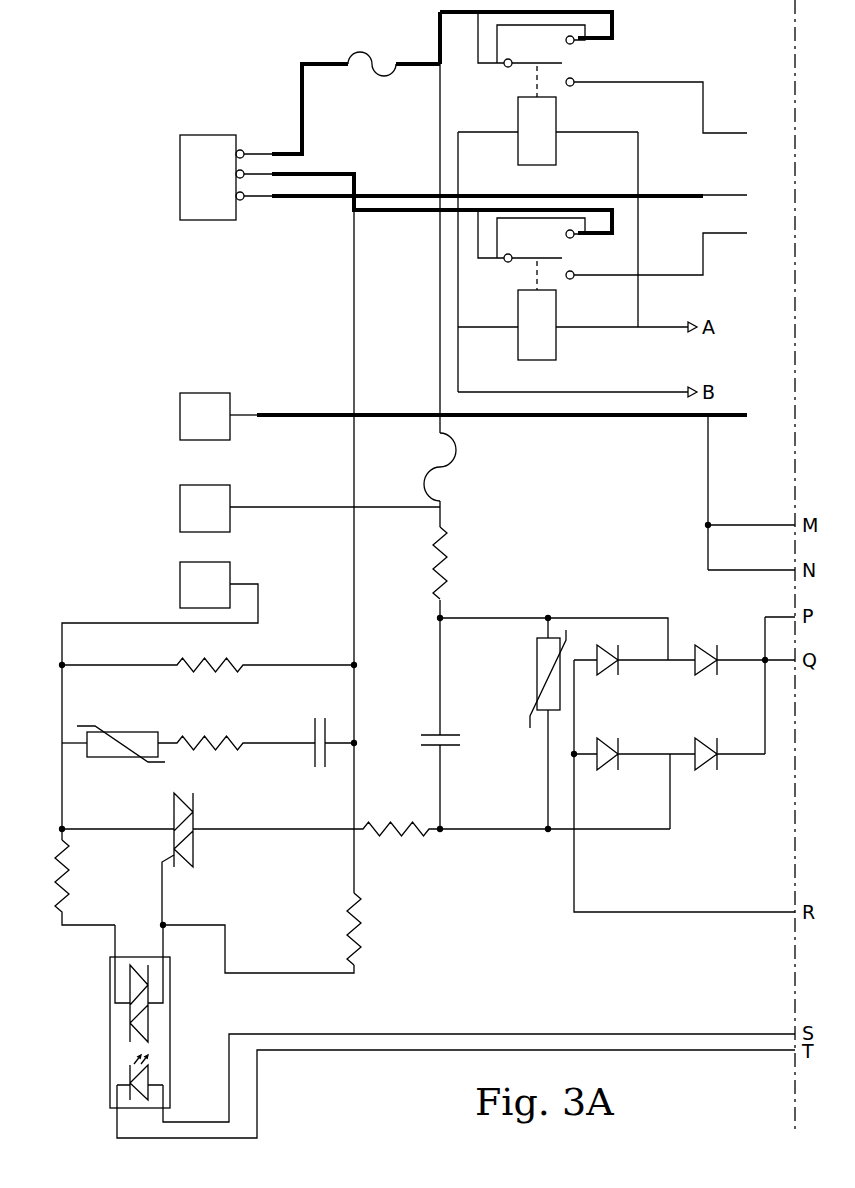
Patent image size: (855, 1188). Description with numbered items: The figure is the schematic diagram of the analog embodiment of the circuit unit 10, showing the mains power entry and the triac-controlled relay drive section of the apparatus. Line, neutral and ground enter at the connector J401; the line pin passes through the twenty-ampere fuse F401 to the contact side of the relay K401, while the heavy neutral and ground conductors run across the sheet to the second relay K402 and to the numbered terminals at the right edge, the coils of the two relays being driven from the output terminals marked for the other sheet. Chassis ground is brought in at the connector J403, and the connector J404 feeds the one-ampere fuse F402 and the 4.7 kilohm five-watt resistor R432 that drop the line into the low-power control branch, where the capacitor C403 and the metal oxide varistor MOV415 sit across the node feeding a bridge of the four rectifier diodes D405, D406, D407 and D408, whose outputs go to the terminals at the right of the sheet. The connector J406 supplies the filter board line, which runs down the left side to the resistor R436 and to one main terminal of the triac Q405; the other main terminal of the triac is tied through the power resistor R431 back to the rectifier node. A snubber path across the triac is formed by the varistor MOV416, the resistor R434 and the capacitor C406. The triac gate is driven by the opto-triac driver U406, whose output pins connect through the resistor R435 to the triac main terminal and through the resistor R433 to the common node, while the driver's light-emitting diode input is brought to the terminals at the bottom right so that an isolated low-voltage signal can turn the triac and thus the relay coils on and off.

The connector J401 is at (152, 165).
The fuse F401 is at (370, 53).
The relay K401 is at (593, 121).
The relay K402 is at (550, 285).
The connector J403 is at (159, 407).
The connector J404 is at (310, 496).
The connector J406 is at (154, 689).
The fuse F402 is at (468, 467).
The resistor R432 is at (468, 563).
The power control circuit 10 is at (645, 532).
The resistor R436 is at (208, 655).
The metal oxide varistor MOV416 is at (113, 731).
The resistor R434 is at (236, 731).
The capacitor C406 is at (327, 731).
The metal oxide varistor MOV415 is at (505, 723).
The capacitor C403 is at (457, 740).
The diode D405 is at (621, 649).
The diode D406 is at (622, 743).
The diode D407 is at (716, 649).
The diode D408 is at (717, 743).
The resistor R431 is at (397, 814).
The triac Q405 is at (207, 859).
The resistor R435 is at (90, 882).
The resistor R433 is at (384, 929).
The opto-triac driver U406 is at (443, 1031).